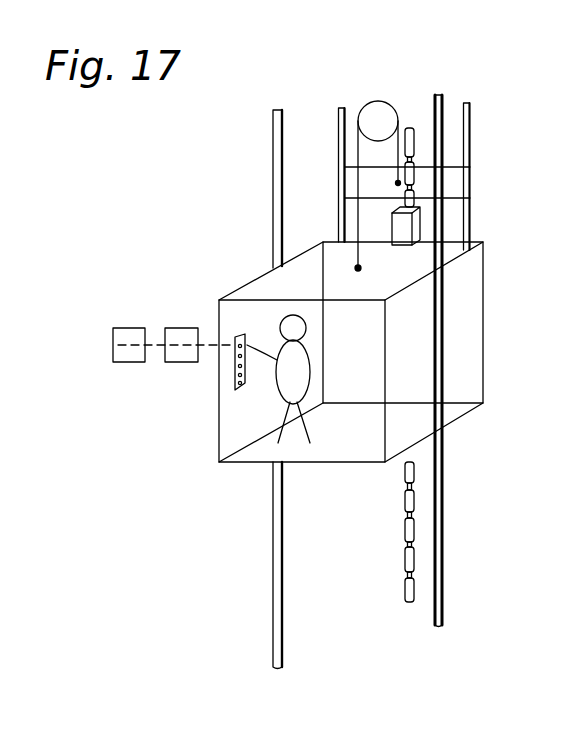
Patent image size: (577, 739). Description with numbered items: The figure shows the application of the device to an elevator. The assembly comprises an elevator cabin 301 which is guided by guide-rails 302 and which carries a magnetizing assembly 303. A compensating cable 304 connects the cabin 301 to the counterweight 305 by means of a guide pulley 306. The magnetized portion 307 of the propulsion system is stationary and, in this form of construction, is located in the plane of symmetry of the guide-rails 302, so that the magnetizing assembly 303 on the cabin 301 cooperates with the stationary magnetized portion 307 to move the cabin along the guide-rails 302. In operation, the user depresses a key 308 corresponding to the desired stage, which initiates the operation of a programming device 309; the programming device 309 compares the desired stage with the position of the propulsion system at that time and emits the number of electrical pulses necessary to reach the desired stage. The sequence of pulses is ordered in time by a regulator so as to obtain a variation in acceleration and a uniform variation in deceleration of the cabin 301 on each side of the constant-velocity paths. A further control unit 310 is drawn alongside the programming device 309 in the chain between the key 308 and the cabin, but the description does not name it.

The elevator cabin 301 is at (227, 388).
The guide-rails 302 is at (280, 183).
The magnetizing assembly 303 is at (398, 245).
The compensating cable 304 is at (358, 268).
The counterweight 305 is at (388, 155).
The guide pulley 306 is at (378, 107).
The magnetized portion 307 is at (415, 174).
The key 308 is at (250, 323).
The programming device 309 is at (122, 332).
The control unit 310 is at (177, 333).